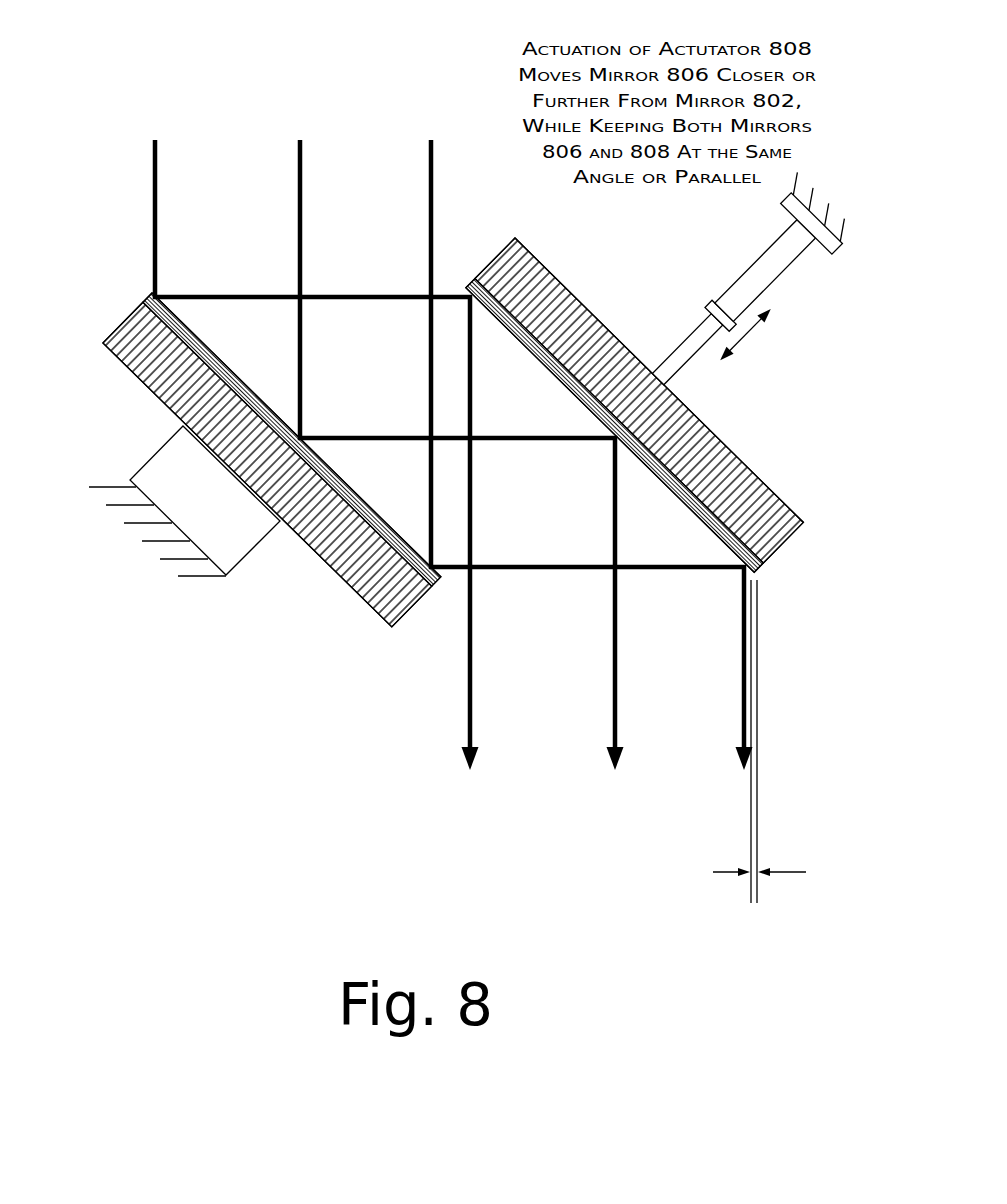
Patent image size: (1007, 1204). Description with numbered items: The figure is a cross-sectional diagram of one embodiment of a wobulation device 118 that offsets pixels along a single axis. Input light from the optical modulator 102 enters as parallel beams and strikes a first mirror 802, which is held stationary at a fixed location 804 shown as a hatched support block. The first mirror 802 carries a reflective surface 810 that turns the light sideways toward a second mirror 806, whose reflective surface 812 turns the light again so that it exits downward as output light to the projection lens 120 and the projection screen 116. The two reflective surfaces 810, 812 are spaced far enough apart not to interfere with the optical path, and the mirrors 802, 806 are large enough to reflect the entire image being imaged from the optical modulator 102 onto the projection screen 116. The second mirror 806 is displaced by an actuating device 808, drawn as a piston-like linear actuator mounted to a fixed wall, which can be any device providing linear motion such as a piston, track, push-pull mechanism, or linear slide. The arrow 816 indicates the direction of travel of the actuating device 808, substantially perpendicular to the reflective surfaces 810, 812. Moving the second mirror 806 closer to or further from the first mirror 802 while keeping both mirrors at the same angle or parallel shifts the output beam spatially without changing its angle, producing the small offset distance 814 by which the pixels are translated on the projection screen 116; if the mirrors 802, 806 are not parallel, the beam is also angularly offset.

The optical modulator 102 is at (284, 104).
The projection screen 116 is at (470, 818).
The wobulation device 118 is at (129, 208).
The projection lens 120 is at (470, 818).
The first mirror 802 is at (274, 435).
The fixed location 804 is at (172, 457).
The second mirror 806 is at (695, 345).
The actuating device 808 is at (723, 307).
The reflective surface 810 is at (204, 343).
The reflective surface 812 is at (557, 387).
The offset distance 814 is at (713, 872).
The arrow 816 is at (752, 333).